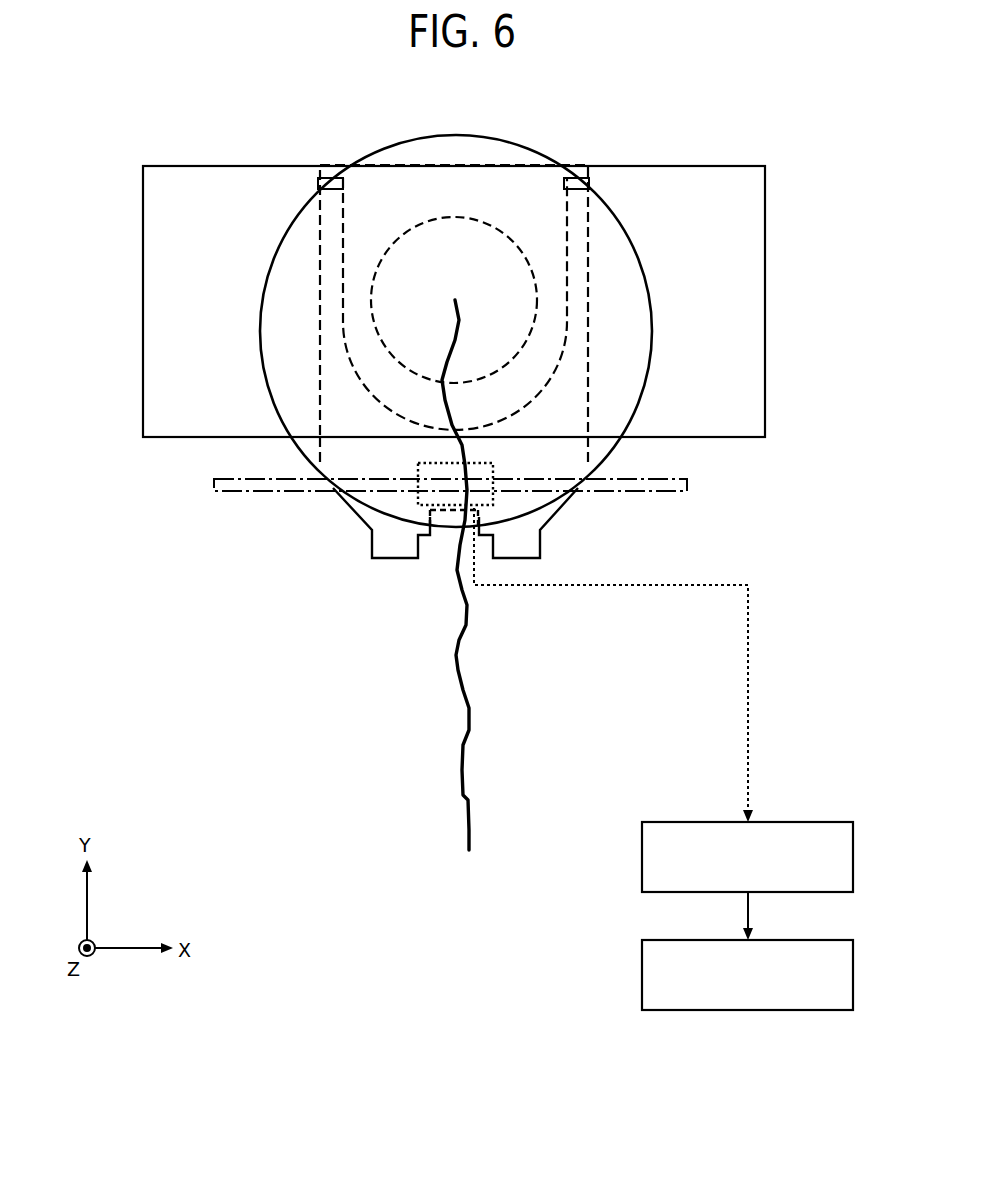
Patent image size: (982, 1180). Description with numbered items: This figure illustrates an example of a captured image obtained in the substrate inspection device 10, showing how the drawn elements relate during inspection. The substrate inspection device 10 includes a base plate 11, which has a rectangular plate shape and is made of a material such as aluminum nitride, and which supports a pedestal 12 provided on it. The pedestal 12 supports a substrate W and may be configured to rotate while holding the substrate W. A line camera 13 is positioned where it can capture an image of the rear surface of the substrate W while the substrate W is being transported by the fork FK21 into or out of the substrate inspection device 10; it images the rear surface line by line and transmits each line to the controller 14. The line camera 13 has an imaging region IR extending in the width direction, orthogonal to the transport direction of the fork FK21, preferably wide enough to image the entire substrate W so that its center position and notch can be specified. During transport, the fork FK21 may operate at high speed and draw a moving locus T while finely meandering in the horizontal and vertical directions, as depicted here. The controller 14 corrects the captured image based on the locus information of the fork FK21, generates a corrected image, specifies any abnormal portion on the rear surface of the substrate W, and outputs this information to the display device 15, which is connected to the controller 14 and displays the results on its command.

The substrate inspection device 10 is at (208, 150).
The base plate 11 is at (766, 228).
The pedestal 12 is at (456, 214).
The line camera 13 is at (430, 463).
The controller 14 is at (786, 821).
The display device 15 is at (786, 939).
The substrate W is at (259, 331).
The imaging region IR is at (670, 478).
The fork FK21 is at (371, 549).
The moving locus T is at (470, 708).